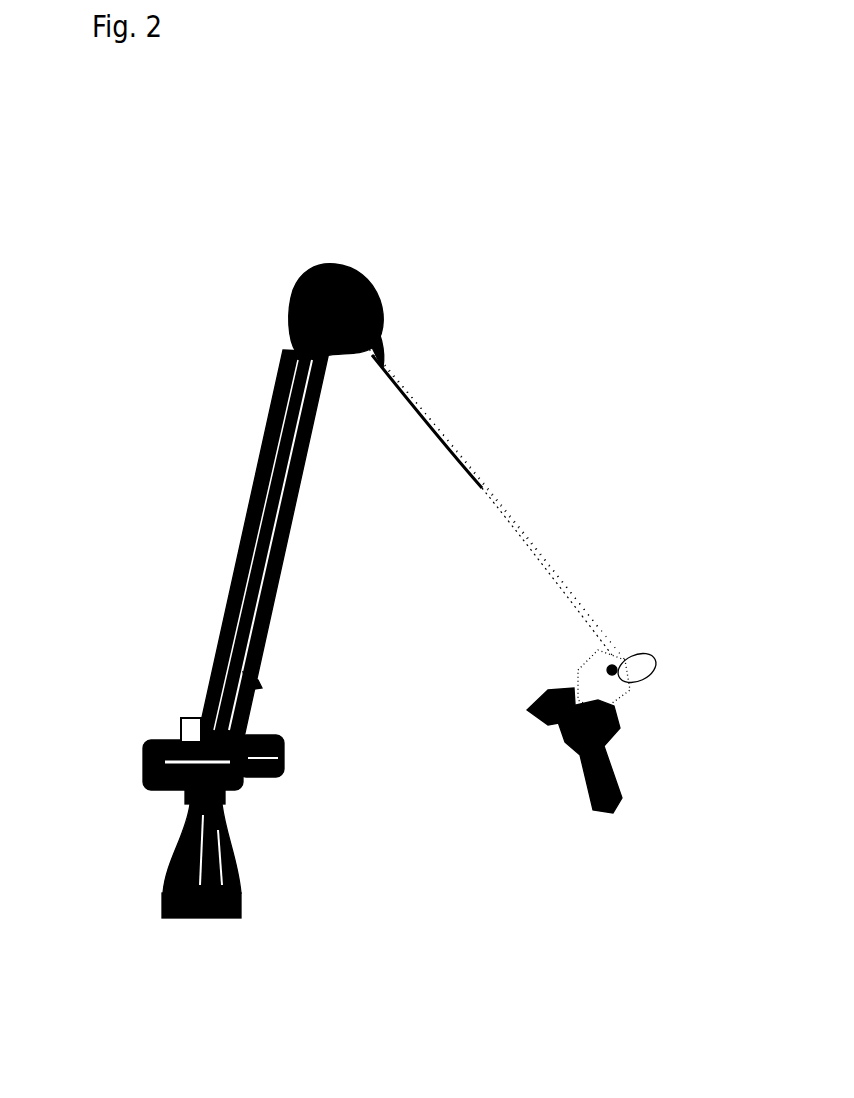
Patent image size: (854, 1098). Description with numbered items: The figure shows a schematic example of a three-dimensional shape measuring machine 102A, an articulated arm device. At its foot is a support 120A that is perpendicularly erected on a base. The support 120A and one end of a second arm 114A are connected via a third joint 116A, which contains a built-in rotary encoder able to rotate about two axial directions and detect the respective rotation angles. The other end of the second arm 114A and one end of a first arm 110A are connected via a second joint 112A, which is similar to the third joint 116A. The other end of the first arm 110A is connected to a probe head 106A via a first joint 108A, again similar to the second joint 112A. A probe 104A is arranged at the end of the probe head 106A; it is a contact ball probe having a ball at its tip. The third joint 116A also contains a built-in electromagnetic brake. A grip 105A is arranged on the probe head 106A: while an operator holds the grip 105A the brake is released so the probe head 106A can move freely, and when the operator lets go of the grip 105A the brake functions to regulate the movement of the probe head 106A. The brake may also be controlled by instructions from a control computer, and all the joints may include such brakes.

The three-dimensional shape measuring machine 102A is at (522, 408).
The probe 104A is at (530, 716).
The grip 105A is at (623, 798).
The probe head 106A is at (572, 676).
The first joint 108A is at (650, 688).
The first arm 110A is at (553, 540).
The second joint 112A is at (265, 337).
The second arm 114A is at (236, 552).
The third joint 116A is at (142, 774).
The support 120A is at (240, 888).